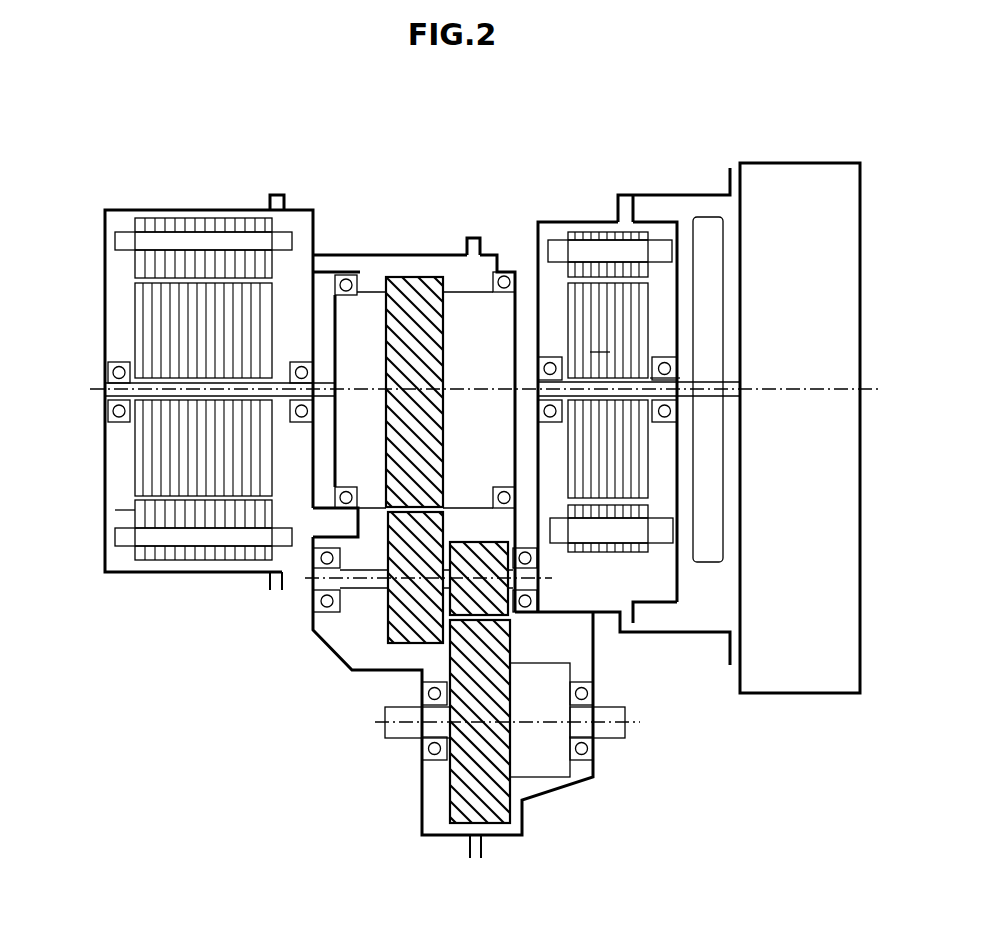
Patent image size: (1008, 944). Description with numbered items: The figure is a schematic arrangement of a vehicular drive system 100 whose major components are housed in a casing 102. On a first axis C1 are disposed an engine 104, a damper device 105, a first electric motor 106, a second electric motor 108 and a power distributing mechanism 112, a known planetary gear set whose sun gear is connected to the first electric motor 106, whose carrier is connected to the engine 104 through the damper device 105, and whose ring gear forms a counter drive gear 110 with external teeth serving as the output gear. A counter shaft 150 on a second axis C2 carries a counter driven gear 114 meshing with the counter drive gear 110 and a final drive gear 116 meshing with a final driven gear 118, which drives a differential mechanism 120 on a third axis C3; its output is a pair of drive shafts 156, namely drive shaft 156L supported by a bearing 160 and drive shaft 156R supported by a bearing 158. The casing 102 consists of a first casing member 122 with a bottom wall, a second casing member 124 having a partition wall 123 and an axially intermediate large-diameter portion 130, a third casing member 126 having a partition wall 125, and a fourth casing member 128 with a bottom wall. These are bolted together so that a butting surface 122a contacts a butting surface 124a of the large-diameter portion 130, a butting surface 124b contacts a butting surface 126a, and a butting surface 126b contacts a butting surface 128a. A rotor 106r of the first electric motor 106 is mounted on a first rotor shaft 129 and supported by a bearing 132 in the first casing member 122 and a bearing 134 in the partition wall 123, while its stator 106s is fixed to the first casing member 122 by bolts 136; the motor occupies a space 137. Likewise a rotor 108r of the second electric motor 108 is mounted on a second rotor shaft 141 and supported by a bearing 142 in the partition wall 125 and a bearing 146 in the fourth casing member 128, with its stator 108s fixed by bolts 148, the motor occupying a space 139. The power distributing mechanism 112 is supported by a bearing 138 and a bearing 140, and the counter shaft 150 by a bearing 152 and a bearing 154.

The vehicular drive system 100 is at (425, 152).
The casing 102 is at (338, 682).
The engine 104 is at (797, 190).
The damper device 105 is at (710, 556).
The first electric motor 106 is at (597, 208).
The rotor of the first electric motor 106r is at (625, 466).
The stator of the first electric motor 106s is at (625, 512).
The second electric motor 108 is at (212, 200).
The rotor of the second electric motor 108r is at (150, 462).
The stator of the second electric motor 108s is at (208, 250).
The counter drive gear 110 is at (415, 300).
The power distributing mechanism 112 is at (372, 280).
The counter driven gear 114 is at (395, 625).
The final drive gear 116 is at (462, 550).
The final driven gear 118 is at (490, 795).
The differential mechanism 120 is at (562, 790).
The first casing member 122 is at (665, 605).
The butting surface of the first casing member 122a is at (633, 613).
The partition wall 123 is at (552, 357).
The second casing member 124 is at (548, 220).
The butting surface of the large-diameter portion 124a is at (626, 207).
The butting surface of the second casing member 124b is at (478, 240).
The partition wall 125 is at (312, 498).
The third casing member 126 is at (378, 255).
The butting surface of the third casing member 126a is at (472, 858).
The butting surface of the third casing member 126b is at (282, 590).
The fourth casing member 128 is at (145, 210).
The butting surface of the fourth casing member 128a is at (276, 200).
The first rotor shaft 129 is at (690, 384).
The large-diameter portion 130 is at (608, 190).
The bearing 132 is at (660, 372).
The bearing 134 is at (600, 352).
The bolts 136 is at (655, 247).
The space 137 is at (662, 612).
The bearing 138 is at (506, 278).
The space 139 is at (125, 514).
The bearing 140 is at (345, 272).
The second rotor shaft 141 is at (110, 399).
The bearing 142 is at (303, 360).
The bearing 146 is at (118, 366).
The bolts 148 is at (166, 240).
The counter shaft 150 is at (366, 578).
The bearing 152 is at (537, 560).
The bearing 154 is at (330, 600).
The drive shafts 156 is at (491, 750).
The drive shaft 156L is at (392, 737).
The drive shaft 156R is at (612, 735).
The bearing 158 is at (592, 688).
The bearing 160 is at (432, 762).
The first axis C1 is at (870, 392).
The second axis C2 is at (540, 582).
The third axis C3 is at (632, 720).